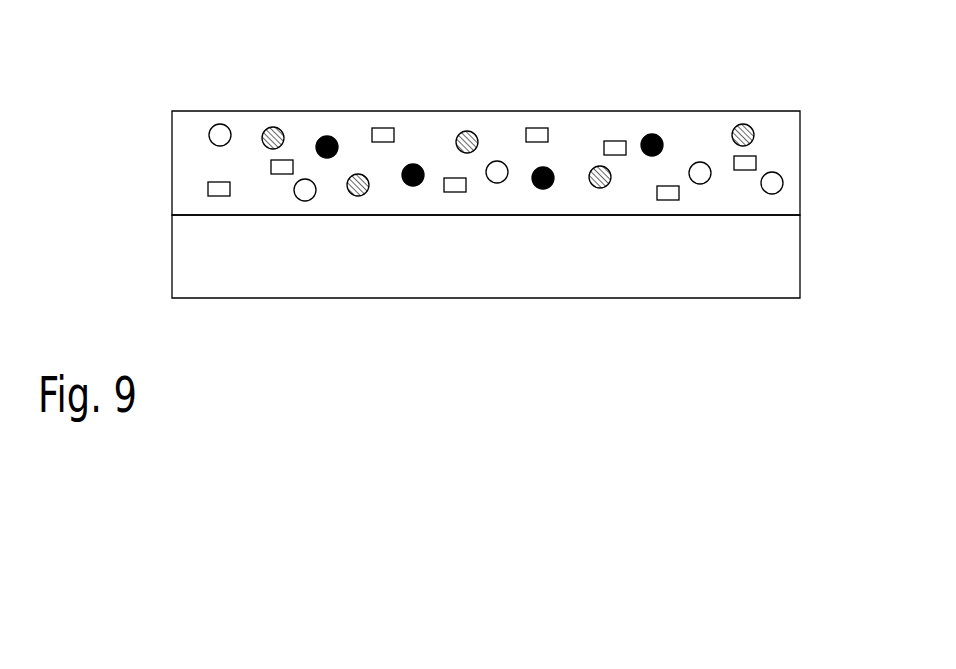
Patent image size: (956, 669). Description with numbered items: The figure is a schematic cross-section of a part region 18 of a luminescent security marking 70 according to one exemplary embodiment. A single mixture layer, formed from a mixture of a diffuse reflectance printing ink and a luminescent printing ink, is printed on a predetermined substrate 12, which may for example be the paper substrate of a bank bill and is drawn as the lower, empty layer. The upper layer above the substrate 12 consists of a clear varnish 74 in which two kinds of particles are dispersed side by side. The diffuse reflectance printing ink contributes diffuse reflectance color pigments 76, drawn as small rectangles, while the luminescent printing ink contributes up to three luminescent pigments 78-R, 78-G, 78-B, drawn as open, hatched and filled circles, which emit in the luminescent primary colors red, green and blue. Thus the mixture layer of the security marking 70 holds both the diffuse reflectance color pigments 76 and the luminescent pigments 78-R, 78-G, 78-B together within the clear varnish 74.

The part region 18 is at (452, 149).
The substrate 12 is at (788, 255).
The luminescent security marking 70 is at (452, 120).
The clear varnish 74 is at (788, 147).
The diffuse reflectance color pigments 76 is at (208, 190).
The luminescent pigment 78-R is at (220, 123).
The luminescent pigment 78-G is at (272, 126).
The luminescent pigment 78-B is at (327, 135).